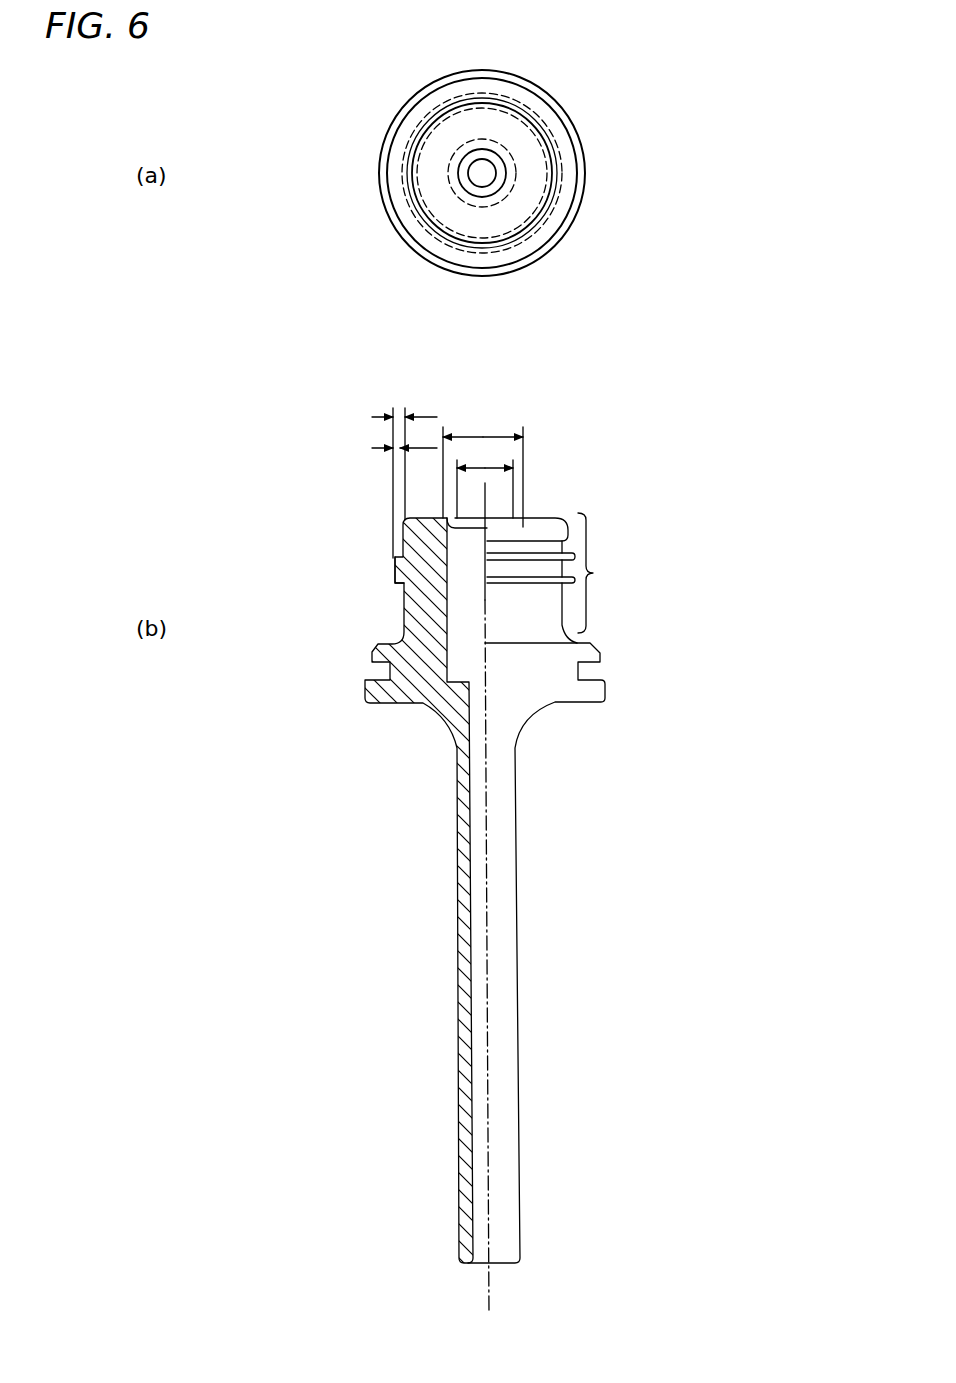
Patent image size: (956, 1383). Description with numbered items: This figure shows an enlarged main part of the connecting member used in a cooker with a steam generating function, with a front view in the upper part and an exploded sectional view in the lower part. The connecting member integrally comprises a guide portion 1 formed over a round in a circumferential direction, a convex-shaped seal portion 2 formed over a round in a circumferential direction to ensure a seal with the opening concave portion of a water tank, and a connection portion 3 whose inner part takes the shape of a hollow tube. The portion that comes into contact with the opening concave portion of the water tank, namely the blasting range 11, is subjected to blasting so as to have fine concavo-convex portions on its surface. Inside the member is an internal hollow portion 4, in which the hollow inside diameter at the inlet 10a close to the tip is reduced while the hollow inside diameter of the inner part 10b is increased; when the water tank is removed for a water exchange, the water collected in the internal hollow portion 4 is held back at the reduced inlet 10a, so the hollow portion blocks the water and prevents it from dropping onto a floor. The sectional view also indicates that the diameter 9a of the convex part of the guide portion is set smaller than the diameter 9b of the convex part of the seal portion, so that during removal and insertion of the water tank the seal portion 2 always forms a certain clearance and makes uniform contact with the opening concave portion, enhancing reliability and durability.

The guide portion 1 is at (398, 530).
The seal portion 2 is at (397, 560).
The connection portion 3 is at (452, 703).
The internal hollow portion 4 is at (487, 175).
The diameter of convex part of guide portion 9a is at (403, 407).
The diameter of convex part of seal portion 9b is at (400, 455).
The hollow inside diameter (inlet) 10a is at (487, 467).
The hollow inside diameter (inner part) 10b is at (487, 437).
The blasting range 11 is at (603, 573).